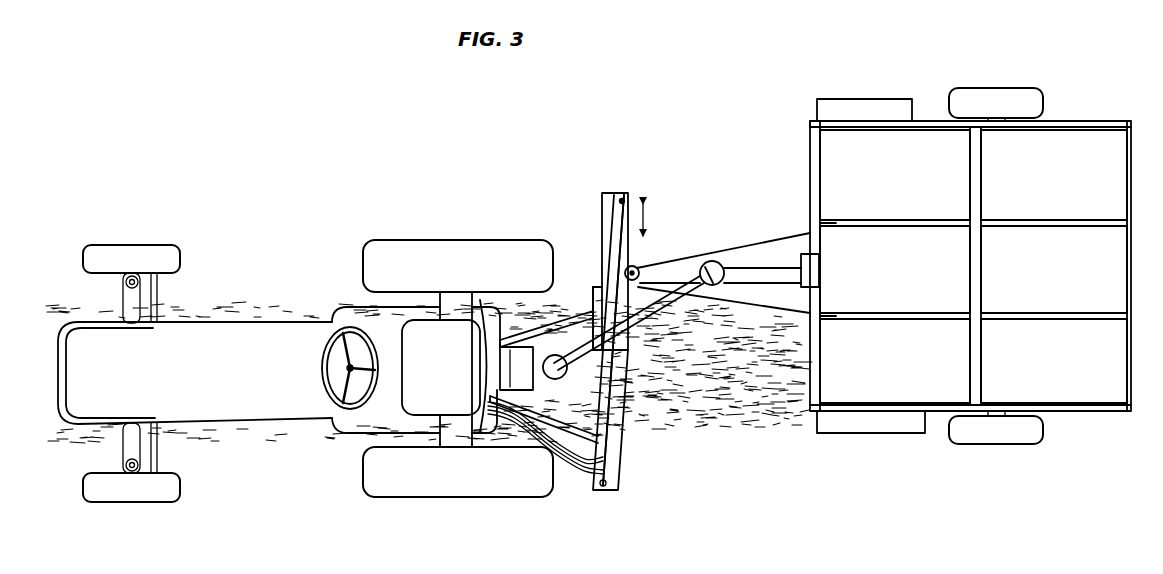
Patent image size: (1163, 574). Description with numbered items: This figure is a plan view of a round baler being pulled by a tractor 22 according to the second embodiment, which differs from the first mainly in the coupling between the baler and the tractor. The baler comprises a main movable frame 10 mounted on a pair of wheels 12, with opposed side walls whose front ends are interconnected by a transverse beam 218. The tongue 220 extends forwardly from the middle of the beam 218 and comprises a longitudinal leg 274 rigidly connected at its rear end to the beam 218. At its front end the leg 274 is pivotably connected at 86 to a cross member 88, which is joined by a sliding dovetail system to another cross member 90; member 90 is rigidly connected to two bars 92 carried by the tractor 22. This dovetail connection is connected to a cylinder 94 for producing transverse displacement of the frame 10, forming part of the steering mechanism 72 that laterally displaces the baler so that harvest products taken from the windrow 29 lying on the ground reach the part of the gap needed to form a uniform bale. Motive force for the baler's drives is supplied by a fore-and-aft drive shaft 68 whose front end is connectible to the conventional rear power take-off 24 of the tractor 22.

The main movable frame 10 is at (941, 256).
The wheels 12 is at (962, 88).
The tractor 22 is at (262, 287).
The rear power take-off 24 is at (555, 355).
The windrow 29 is at (722, 403).
The drive shaft 68 is at (740, 268).
The steering mechanism 72 is at (602, 187).
The pivotable connection 86 is at (637, 272).
The cross member 88 is at (623, 228).
The cross member 90 is at (593, 290).
The bars 92 is at (527, 330).
The cylinder 94 is at (605, 437).
The transverse beam 218 is at (810, 170).
The tongue 220 is at (765, 230).
The longitudinal leg 274 is at (790, 296).